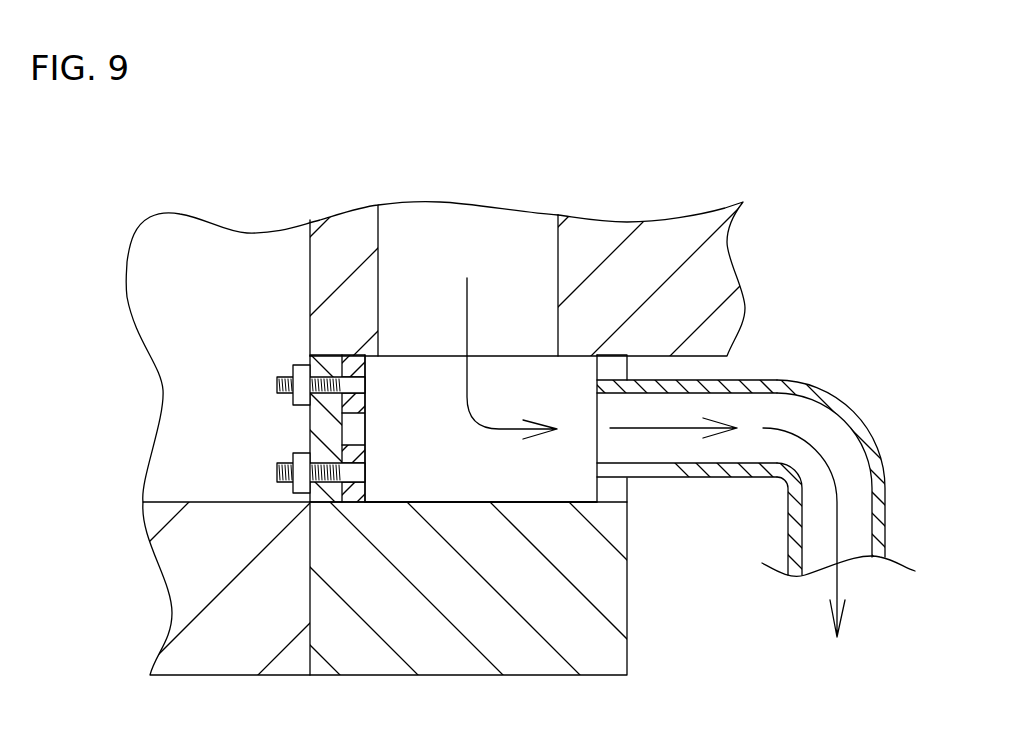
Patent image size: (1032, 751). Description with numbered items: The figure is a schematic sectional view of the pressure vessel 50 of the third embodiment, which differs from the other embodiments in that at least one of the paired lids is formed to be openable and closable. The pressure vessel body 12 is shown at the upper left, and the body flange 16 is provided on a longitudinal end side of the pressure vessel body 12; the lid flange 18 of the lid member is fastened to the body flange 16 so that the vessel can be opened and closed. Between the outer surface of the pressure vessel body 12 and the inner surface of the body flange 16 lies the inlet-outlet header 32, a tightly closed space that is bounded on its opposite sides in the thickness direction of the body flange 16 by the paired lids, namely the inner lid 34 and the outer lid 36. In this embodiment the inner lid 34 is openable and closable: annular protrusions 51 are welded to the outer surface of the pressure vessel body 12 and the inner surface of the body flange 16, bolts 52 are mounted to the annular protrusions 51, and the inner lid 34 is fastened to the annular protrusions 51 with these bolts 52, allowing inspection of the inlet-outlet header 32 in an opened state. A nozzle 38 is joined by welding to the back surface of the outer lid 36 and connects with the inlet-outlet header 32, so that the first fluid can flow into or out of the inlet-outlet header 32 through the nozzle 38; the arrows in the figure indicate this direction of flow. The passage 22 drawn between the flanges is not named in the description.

The pressure vessel body 12 is at (667, 236).
The body flange 16 is at (548, 663).
The lid flange 18 is at (187, 232).
The flow passage 22 is at (523, 356).
The inlet-outlet header 32 is at (442, 487).
The inner lid 34 is at (313, 430).
The outer lid 36 is at (623, 492).
The nozzle 38 is at (778, 376).
The pressure vessel 50 is at (102, 237).
The annular protrusions 51 is at (353, 412).
The bolts 52 is at (277, 378).